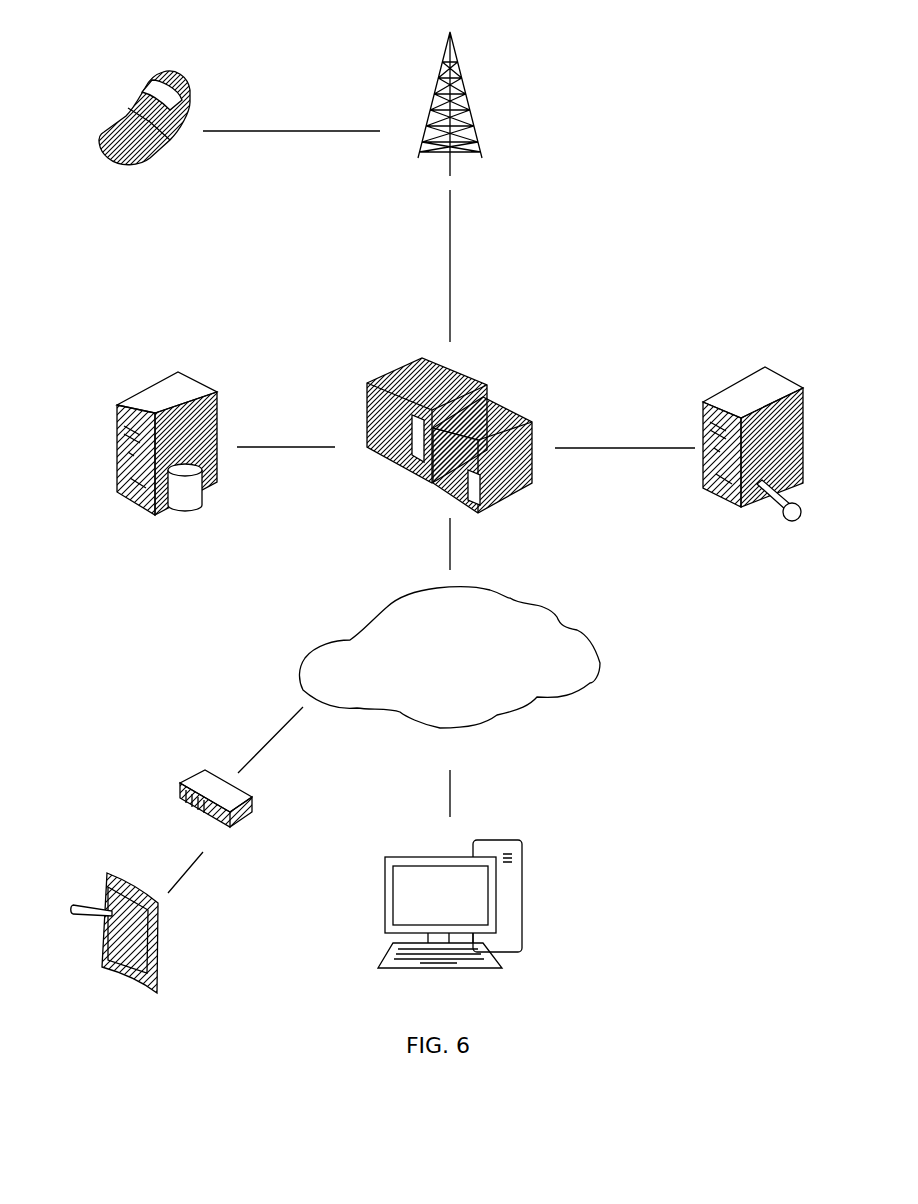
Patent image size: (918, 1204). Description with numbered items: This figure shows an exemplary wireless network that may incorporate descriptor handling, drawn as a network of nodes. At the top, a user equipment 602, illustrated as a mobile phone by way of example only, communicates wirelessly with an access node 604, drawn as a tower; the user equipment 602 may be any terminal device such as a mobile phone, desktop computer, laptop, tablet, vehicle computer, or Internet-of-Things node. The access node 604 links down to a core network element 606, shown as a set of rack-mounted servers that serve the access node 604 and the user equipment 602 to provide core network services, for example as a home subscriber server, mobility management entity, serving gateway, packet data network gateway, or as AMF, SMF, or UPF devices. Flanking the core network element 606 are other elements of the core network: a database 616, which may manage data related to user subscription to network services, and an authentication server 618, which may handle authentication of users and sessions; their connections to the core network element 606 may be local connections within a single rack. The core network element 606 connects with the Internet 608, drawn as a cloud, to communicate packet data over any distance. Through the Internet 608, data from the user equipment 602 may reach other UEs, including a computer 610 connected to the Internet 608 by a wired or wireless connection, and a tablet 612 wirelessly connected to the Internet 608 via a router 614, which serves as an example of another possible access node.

The user equipment 602 is at (187, 42).
The access node 604 is at (483, 43).
The core network element 606 is at (502, 378).
The Internet 608 is at (590, 590).
The computer 610 is at (557, 852).
The tablet 612 is at (95, 872).
The router 614 is at (182, 763).
The database 616 is at (207, 362).
The authentication server 618 is at (712, 377).